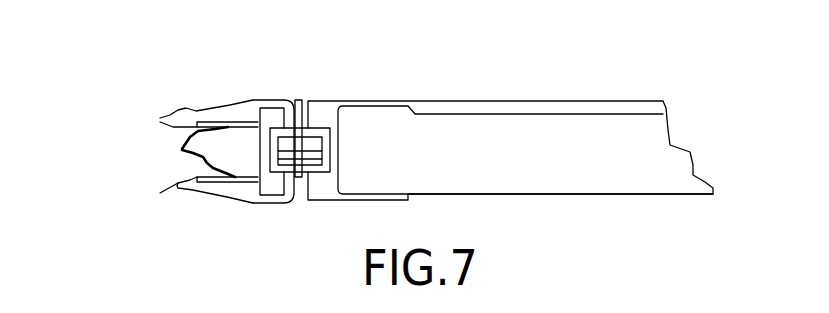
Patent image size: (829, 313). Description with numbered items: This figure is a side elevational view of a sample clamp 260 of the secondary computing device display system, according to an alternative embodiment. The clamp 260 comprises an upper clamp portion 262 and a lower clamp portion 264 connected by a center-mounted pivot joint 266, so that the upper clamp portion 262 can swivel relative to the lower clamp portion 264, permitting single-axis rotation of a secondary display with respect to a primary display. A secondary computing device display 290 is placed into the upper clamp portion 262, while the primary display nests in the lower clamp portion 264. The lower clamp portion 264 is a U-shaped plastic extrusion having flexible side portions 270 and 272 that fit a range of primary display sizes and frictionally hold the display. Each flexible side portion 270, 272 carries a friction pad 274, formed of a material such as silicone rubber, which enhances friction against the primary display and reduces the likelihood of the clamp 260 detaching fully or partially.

The clamp 260 is at (110, 82).
The upper clamp portion 262 is at (328, 95).
The lower clamp portion 264 is at (232, 108).
The center-mounted pivot joint 266 is at (302, 103).
The flexible side portion 270 is at (160, 118).
The flexible side portion 272 is at (160, 193).
The friction pad 274 is at (182, 150).
The secondary computing device display 290 is at (382, 122).